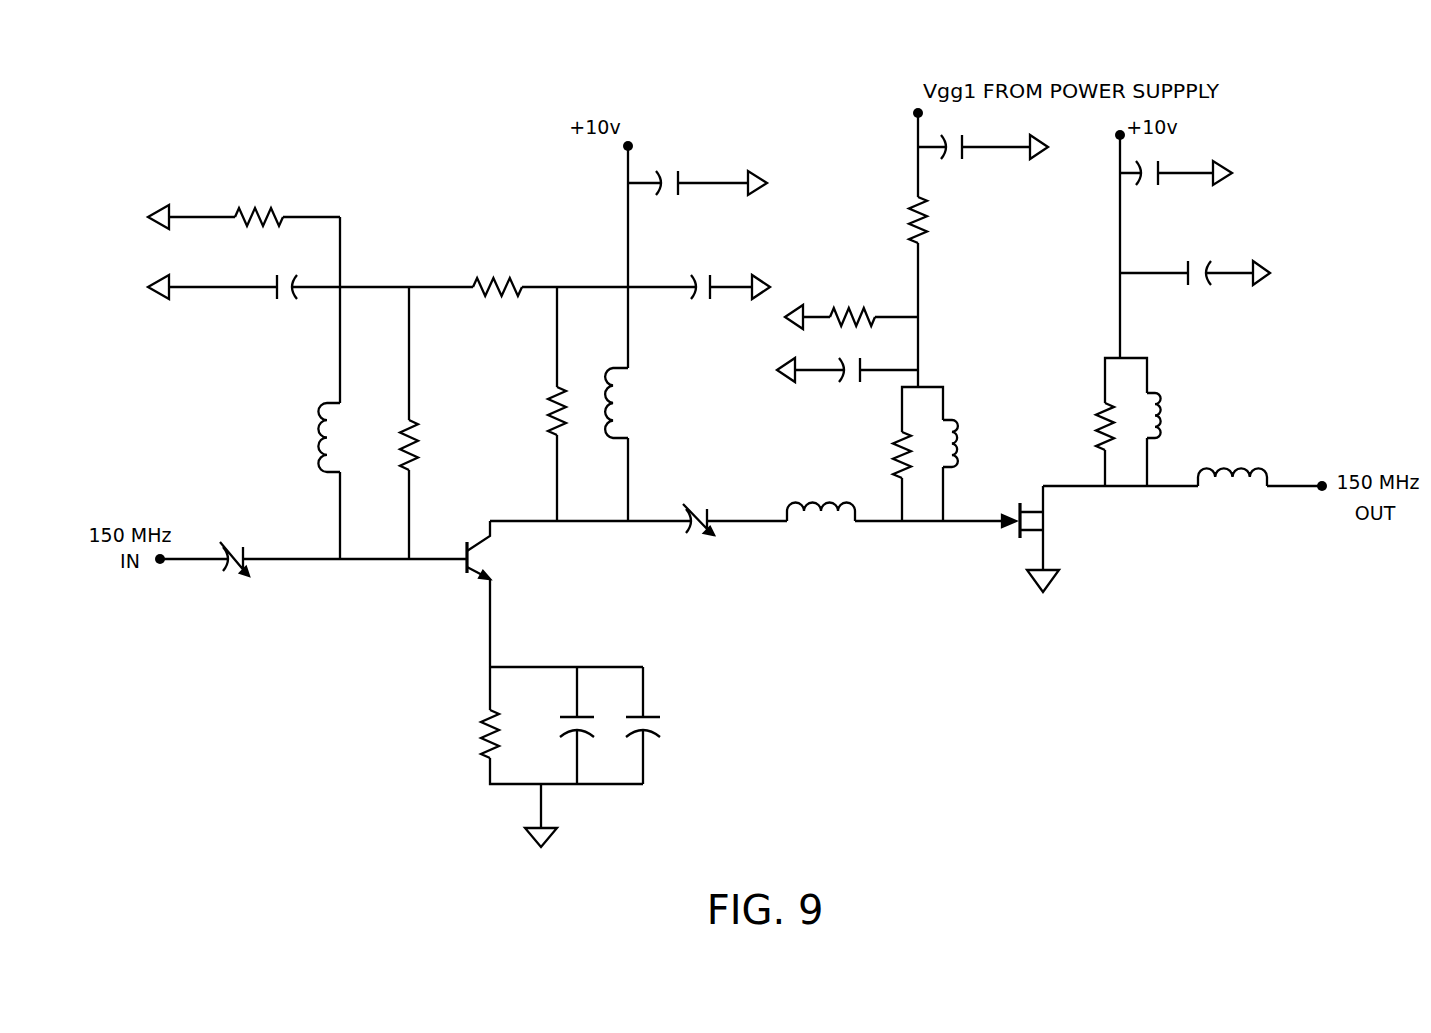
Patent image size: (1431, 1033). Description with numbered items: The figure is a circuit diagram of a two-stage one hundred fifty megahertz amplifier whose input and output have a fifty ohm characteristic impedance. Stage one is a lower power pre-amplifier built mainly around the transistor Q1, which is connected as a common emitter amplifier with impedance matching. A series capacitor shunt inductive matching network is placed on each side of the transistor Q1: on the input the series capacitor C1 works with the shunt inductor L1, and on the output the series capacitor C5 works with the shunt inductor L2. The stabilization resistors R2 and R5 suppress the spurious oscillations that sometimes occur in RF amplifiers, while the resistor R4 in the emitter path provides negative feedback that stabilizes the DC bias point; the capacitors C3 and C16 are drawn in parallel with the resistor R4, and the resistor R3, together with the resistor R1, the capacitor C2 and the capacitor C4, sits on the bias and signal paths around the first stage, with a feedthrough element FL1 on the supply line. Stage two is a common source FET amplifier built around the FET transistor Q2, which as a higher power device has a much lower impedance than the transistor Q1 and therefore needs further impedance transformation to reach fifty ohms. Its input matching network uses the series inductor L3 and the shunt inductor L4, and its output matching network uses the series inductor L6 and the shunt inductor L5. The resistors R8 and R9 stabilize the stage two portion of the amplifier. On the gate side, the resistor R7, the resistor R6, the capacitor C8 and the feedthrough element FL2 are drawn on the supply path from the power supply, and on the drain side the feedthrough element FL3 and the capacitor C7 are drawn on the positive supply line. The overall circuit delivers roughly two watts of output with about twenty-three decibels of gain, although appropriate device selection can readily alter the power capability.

The resistor R1 is at (259, 231).
The capacitor C2 is at (284, 304).
The resistor R3 is at (497, 301).
The capacitor C4 is at (701, 303).
The feedthrough filter FL1 is at (658, 161).
The shunt inductor L1 is at (312, 437).
The stabilization resistor R2 is at (391, 445).
The stabilization resistor R5 is at (540, 411).
The shunt inductor L2 is at (630, 403).
The transistor Q1 is at (493, 550).
The series capacitor C1 is at (234, 574).
The series capacitor C5 is at (699, 536).
The series inductor L3 is at (821, 528).
The resistor R4 is at (474, 734).
The capacitor C3 is at (560, 728).
The capacitor C16 is at (668, 728).
The feedthrough filter FL2 is at (916, 130).
The resistor R7 is at (901, 220).
The resistor R6 is at (852, 304).
The capacitor C8 is at (849, 386).
The resistor R8 is at (885, 455).
The shunt inductor L4 is at (966, 443).
The feedthrough filter FL3 is at (1116, 166).
The capacitor C7 is at (1198, 290).
The resistor R9 is at (1089, 426).
The shunt inductor L5 is at (1169, 415).
The FET transistor Q2 is at (1041, 520).
The series inductor L6 is at (1232, 494).